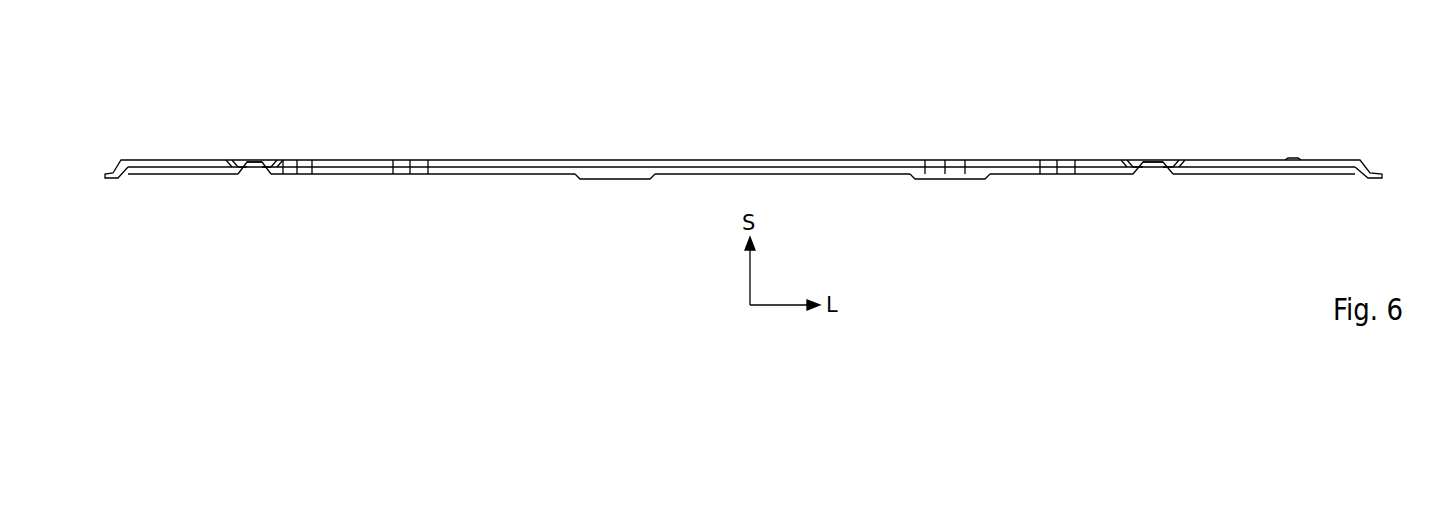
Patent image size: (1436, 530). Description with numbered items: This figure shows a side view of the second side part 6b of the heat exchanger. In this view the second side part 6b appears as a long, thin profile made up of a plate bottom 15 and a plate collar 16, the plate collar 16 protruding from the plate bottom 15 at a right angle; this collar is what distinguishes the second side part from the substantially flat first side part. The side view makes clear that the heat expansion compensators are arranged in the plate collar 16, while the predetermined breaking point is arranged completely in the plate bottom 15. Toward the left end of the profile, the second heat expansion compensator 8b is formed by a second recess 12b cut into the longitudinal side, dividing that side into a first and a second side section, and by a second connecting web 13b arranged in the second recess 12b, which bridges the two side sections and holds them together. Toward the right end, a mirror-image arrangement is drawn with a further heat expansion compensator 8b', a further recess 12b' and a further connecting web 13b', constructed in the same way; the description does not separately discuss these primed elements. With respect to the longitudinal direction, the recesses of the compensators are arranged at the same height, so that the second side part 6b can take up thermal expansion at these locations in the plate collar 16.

The second side part 6b is at (1360, 133).
The plate bottom 15 is at (500, 163).
The plate collar 16 is at (526, 175).
The second connecting web 13b is at (266, 129).
The second recess 12b is at (240, 204).
The second heat expansion compensator 8b is at (266, 215).
The recess 13b' is at (1170, 129).
The clamping section 12b' is at (1143, 204).
The latching point 8b' is at (1171, 215).